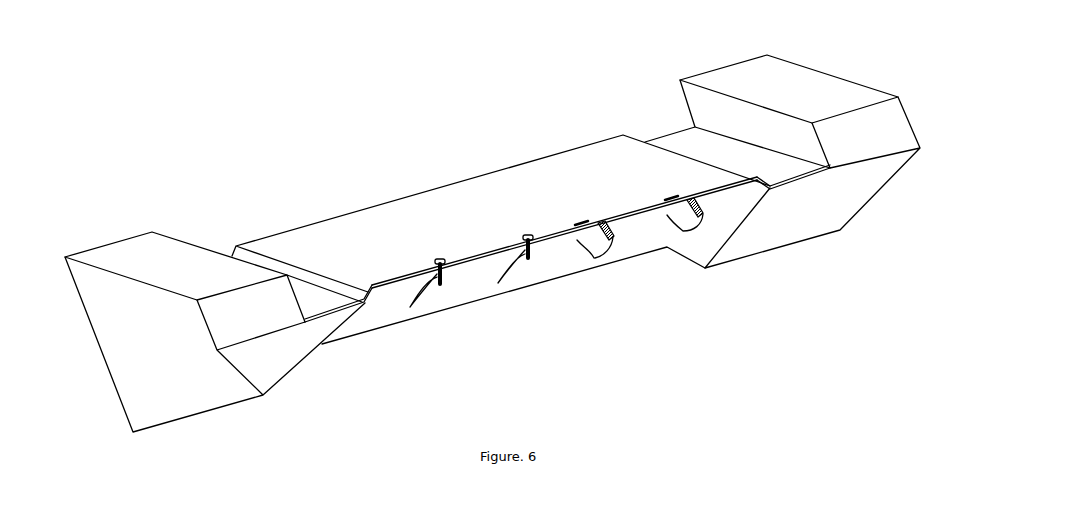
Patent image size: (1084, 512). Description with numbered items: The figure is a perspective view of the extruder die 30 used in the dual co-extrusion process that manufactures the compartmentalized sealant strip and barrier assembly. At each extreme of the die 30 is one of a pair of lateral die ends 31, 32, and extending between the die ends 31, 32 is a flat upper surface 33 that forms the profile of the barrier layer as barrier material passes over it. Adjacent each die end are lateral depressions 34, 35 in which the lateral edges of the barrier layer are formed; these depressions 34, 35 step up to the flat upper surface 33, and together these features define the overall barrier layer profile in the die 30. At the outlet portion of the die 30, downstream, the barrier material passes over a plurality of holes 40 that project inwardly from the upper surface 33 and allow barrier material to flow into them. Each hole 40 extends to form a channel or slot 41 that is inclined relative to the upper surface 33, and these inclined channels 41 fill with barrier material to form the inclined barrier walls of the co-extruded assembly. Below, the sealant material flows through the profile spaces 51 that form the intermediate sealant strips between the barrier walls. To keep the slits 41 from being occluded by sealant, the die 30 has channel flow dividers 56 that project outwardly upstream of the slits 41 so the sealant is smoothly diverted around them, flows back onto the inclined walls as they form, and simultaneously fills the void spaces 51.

The die 30 is at (478, 140).
The lateral die end 31 is at (137, 355).
The lateral die end 32 is at (893, 127).
The upper surface 33 is at (348, 227).
The depression 34 is at (697, 133).
The depression 35 is at (317, 302).
The hole 40 is at (442, 259).
The inclined channel 41 is at (440, 284).
The space 51 is at (463, 296).
The channel flow divider 56 is at (412, 306).